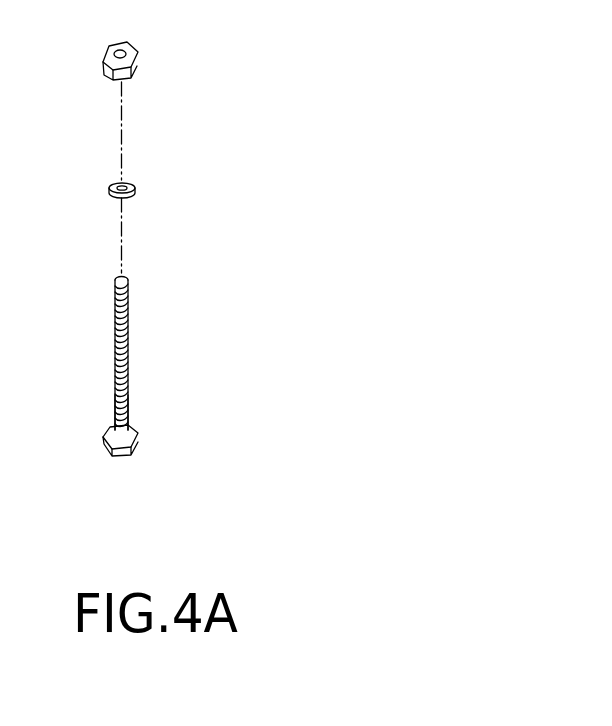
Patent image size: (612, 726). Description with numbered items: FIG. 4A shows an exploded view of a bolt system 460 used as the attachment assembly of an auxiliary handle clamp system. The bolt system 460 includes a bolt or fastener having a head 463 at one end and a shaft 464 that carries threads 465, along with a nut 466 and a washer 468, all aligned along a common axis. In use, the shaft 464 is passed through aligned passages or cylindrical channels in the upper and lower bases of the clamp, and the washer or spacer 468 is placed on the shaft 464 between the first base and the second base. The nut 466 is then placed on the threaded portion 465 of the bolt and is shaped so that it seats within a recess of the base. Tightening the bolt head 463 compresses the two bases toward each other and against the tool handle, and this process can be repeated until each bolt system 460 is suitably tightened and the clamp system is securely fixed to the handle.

The bolt system 460 is at (348, 80).
The head 463 is at (130, 455).
The shaft 464 is at (128, 412).
The threads 465 is at (128, 303).
The nut 466 is at (138, 68).
The washer 468 is at (134, 195).